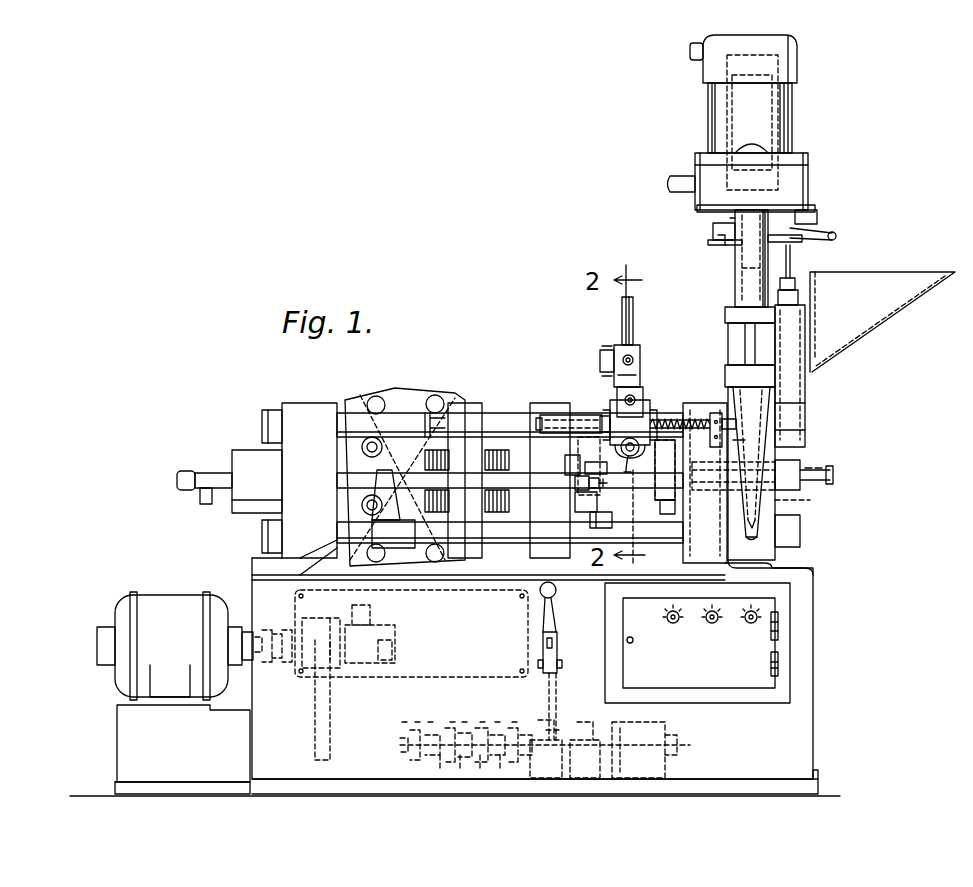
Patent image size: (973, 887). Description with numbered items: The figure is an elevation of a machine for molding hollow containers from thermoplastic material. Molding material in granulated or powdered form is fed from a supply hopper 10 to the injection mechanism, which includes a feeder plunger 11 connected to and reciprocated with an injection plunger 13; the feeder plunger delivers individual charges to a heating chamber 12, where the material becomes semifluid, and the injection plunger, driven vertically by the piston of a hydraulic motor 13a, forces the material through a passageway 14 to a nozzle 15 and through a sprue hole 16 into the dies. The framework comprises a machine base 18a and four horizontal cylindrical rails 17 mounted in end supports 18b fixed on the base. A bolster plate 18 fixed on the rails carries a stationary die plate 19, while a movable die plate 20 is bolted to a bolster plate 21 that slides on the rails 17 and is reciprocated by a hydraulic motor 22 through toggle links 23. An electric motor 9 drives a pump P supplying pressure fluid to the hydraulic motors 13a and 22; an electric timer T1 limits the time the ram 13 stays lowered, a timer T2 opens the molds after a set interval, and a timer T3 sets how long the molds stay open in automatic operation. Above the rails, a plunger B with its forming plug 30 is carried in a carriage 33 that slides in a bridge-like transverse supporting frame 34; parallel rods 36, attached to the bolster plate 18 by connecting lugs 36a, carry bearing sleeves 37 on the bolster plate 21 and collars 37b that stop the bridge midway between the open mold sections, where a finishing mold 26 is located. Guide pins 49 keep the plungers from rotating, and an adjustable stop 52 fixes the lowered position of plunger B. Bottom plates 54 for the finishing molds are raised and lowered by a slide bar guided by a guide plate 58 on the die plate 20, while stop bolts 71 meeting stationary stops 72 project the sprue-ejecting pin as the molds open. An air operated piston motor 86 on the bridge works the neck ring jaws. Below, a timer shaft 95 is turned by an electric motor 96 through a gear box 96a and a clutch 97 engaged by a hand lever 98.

The electric motor 9 is at (163, 606).
The supply hopper 10 is at (905, 288).
The feeder plunger 11 is at (805, 386).
The heating chamber 12 is at (770, 400).
The injection plunger 13 is at (745, 292).
The hydraulic motor 13a is at (783, 126).
The passageway 14 is at (790, 500).
The nozzle 15 is at (670, 460).
The sprue hole 16 is at (662, 498).
The horizontal cylindrical rails 17 is at (500, 414).
The bolster plate 18 is at (700, 538).
The machine base 18a is at (802, 607).
The end supports 18b is at (297, 418).
The stationary die plate 19 is at (672, 500).
The movable die plate 20 is at (580, 450).
The bolster plate 21 is at (553, 406).
The hydraulic motor 22 is at (408, 480).
The toggle links 23 is at (405, 402).
The finishing mold 26 is at (598, 441).
The forming plug 30 is at (634, 458).
The carriage 33 is at (636, 378).
The transverse supporting frame 34 is at (643, 403).
The parallel rods 36 is at (697, 420).
The connecting lugs 36a is at (718, 443).
The bearing sleeves 37 is at (546, 418).
The collars 37b is at (602, 418).
The guide pins 49 is at (633, 358).
The stop 52 is at (618, 350).
The bottom plates 54 is at (590, 470).
The guide plate 58 is at (600, 514).
The stop bolts 71 is at (580, 486).
The stationary stops 72 is at (520, 478).
The air operated piston motor 86 is at (626, 472).
The timer shaft 95 is at (466, 748).
The electric motor 96 is at (670, 727).
The gear box 96a is at (587, 724).
The clutch 97 is at (548, 732).
The hand lever 98 is at (556, 593).
The plunger B is at (634, 330).
The pump P is at (385, 614).
The electric timer T1 is at (673, 624).
The timer T2 is at (712, 624).
The timer T3 is at (751, 624).